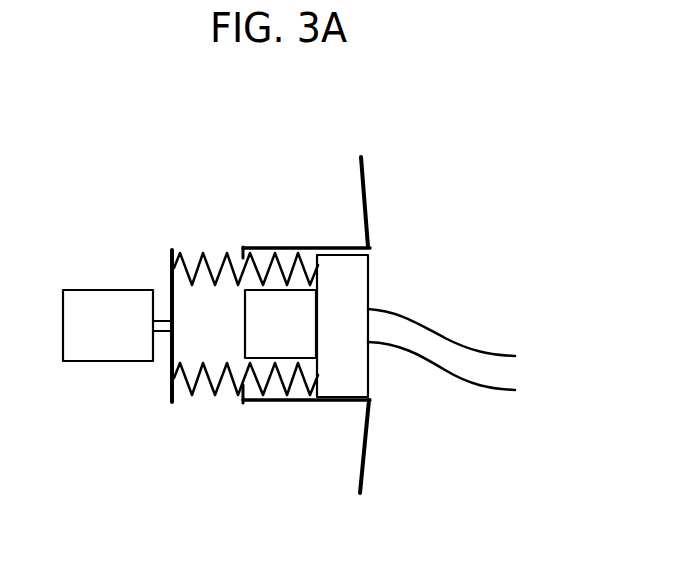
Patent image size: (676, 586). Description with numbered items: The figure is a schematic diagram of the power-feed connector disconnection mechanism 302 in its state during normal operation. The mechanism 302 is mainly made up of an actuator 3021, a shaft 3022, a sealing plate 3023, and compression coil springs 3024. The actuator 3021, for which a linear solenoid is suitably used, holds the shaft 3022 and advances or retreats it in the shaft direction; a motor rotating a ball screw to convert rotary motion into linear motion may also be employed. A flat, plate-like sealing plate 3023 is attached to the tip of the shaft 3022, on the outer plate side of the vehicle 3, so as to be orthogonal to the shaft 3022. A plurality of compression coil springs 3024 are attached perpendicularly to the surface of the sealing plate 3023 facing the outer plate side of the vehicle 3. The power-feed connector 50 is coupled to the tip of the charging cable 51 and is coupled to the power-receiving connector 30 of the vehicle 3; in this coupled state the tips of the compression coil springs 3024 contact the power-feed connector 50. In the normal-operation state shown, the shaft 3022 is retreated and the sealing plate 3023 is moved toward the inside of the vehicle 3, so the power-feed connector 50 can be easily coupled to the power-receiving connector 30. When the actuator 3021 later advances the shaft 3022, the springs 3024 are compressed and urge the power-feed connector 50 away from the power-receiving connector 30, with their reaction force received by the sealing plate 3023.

The power-feed connector disconnection mechanism 302 is at (100, 148).
The actuator 3021 is at (93, 290).
The shaft 3022 is at (161, 320).
The sealing plate 3023 is at (170, 390).
The compression coil spring 3024 is at (215, 262).
The power-receiving connector 30 is at (288, 300).
The power-feed connector 50 is at (344, 262).
The charging cable 51 is at (467, 350).
The vehicle 3 is at (368, 172).